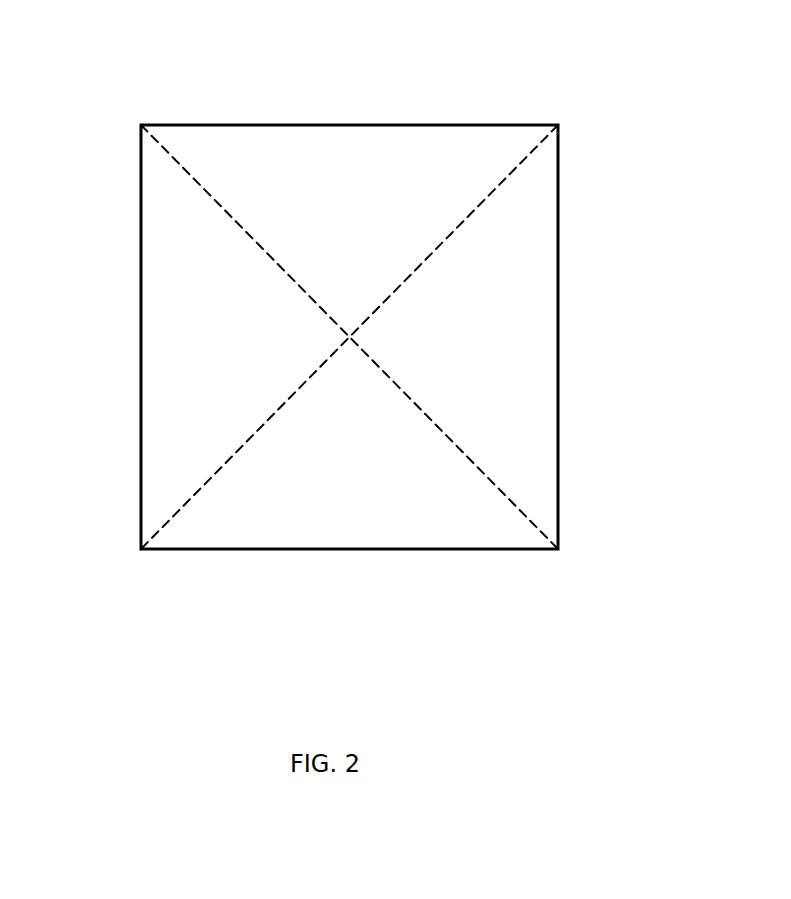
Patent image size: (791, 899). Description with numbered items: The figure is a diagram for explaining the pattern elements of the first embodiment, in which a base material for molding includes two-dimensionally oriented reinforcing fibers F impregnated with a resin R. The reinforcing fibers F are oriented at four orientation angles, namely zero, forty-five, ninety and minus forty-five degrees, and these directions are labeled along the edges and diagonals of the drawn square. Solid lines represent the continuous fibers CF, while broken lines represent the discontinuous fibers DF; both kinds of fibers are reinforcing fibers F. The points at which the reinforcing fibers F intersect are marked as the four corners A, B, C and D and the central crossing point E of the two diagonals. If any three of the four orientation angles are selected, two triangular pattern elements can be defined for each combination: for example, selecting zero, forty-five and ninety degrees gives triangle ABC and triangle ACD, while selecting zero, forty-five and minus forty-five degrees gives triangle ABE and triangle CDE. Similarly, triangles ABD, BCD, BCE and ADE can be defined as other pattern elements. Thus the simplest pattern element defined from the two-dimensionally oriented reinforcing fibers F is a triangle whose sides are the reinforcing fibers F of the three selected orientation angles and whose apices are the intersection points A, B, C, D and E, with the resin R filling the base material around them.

The resin R is at (173, 470).
The intersection point E is at (349, 337).
The intersection point A is at (121, 563).
The intersection point B is at (577, 563).
The intersection point C is at (578, 114).
The intersection point D is at (120, 113).
The reinforcing fibers F is at (517, 125).
The continuous fibers CF is at (397, 125).
The discontinuous fibers DF is at (285, 272).